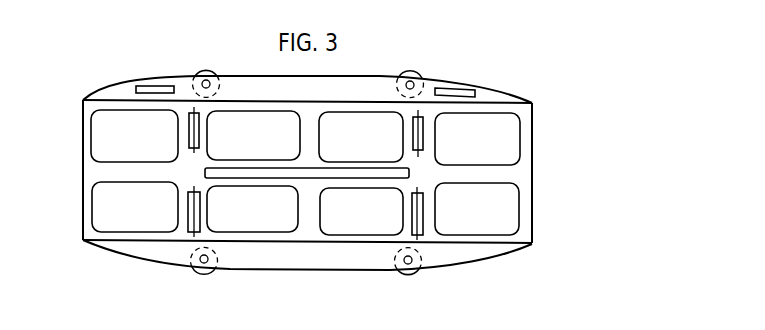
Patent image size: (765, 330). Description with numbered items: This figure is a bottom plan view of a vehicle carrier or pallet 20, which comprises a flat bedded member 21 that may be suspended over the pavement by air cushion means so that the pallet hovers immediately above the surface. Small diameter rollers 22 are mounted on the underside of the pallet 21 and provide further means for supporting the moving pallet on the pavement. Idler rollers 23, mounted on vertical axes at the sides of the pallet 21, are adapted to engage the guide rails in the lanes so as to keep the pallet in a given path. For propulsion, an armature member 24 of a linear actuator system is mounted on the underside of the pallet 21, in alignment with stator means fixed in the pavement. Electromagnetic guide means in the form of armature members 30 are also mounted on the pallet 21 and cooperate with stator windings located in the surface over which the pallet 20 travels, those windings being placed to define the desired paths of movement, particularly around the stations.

The carrier or pallet 20 is at (488, 83).
The flat bedded member 21 is at (521, 155).
The small diameter rollers 22 is at (412, 118).
The idler rollers 23 is at (202, 72).
The armature member 24 is at (297, 174).
The armature members 30 is at (158, 87).